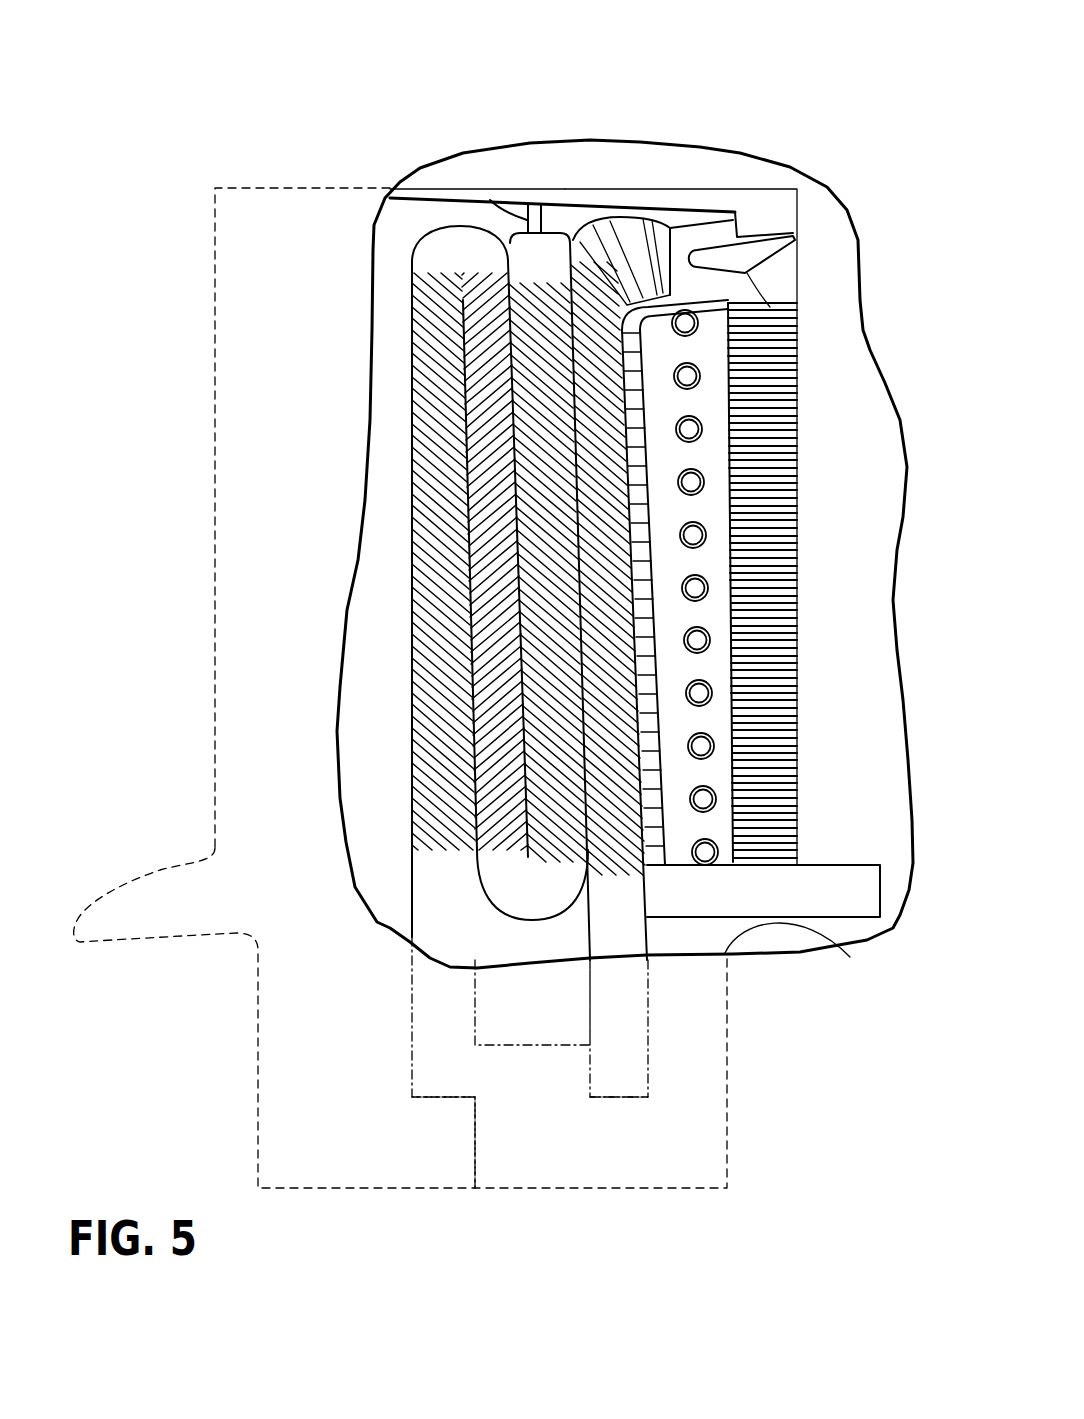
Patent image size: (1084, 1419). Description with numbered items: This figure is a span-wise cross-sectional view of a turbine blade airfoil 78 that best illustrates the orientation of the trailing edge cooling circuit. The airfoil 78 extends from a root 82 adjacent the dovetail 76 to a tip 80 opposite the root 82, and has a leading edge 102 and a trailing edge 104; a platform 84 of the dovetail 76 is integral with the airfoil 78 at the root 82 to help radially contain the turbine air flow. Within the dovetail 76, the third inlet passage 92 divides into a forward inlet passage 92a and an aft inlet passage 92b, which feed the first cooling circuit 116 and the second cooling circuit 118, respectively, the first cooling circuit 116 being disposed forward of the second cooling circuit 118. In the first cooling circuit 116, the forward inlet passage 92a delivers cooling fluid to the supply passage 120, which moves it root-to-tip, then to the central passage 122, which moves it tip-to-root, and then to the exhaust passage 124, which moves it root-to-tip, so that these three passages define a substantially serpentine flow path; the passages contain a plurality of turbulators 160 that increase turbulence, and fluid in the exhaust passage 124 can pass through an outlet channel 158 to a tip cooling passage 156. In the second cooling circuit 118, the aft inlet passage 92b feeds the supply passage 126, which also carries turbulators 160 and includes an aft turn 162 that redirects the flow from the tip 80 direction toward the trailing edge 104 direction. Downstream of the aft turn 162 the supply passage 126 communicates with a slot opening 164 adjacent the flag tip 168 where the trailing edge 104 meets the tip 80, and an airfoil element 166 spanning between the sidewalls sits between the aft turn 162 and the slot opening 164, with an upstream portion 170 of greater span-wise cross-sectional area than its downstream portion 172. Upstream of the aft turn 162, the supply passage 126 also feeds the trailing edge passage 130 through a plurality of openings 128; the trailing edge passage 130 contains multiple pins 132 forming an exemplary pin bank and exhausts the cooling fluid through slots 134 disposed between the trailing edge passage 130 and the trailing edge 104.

The dovetail 76 is at (735, 1063).
The airfoil 78 is at (688, 123).
The tip 80 is at (317, 188).
The root 82 is at (212, 748).
The platform 84 is at (188, 937).
The third inlet passage 92 is at (532, 1137).
The forward inlet passage 92a is at (455, 1077).
The aft inlet passage 92b is at (620, 1070).
The leading edge 102 is at (213, 210).
The trailing edge 104 is at (805, 225).
The first cooling circuit 116 is at (563, 48).
The second cooling circuit 118 is at (793, 48).
The supply passage 120 is at (405, 558).
The central passage 122 is at (498, 848).
The exhaust passage 124 is at (553, 858).
The supply passage 126 is at (615, 897).
The openings 128 is at (683, 852).
The trailing edge passage 130 is at (720, 857).
The pins 132 is at (705, 600).
The slots 134 is at (787, 410).
The tip cooling passage 156 is at (560, 197).
The outlet channel 158 is at (490, 200).
The turbulators 160 is at (516, 306).
The aft turn 162 is at (632, 295).
The slot opening 164 is at (757, 218).
The airfoil element 166 is at (760, 266).
The flag tip 168 is at (797, 190).
The upstream portion 170 is at (710, 262).
The downstream portion 172 is at (752, 252).